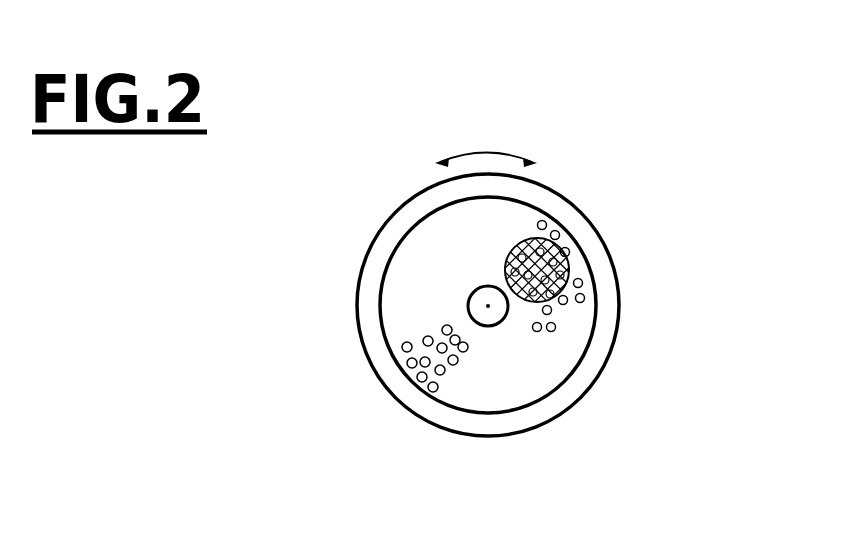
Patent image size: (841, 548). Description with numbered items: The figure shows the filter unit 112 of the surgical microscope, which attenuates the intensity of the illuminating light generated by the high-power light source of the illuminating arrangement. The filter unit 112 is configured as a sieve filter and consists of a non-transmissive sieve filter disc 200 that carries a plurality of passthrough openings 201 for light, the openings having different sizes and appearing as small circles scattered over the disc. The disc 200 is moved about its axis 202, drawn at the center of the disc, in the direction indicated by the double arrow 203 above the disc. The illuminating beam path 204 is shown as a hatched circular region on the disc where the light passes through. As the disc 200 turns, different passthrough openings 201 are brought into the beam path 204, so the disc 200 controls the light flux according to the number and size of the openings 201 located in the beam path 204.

The filter unit 112 is at (648, 186).
The sieve filter disc 200 is at (545, 412).
The passthrough openings 201 is at (552, 328).
The axis 202 is at (488, 306).
The double arrow 203 is at (488, 155).
The illuminating beam path 204 is at (567, 258).